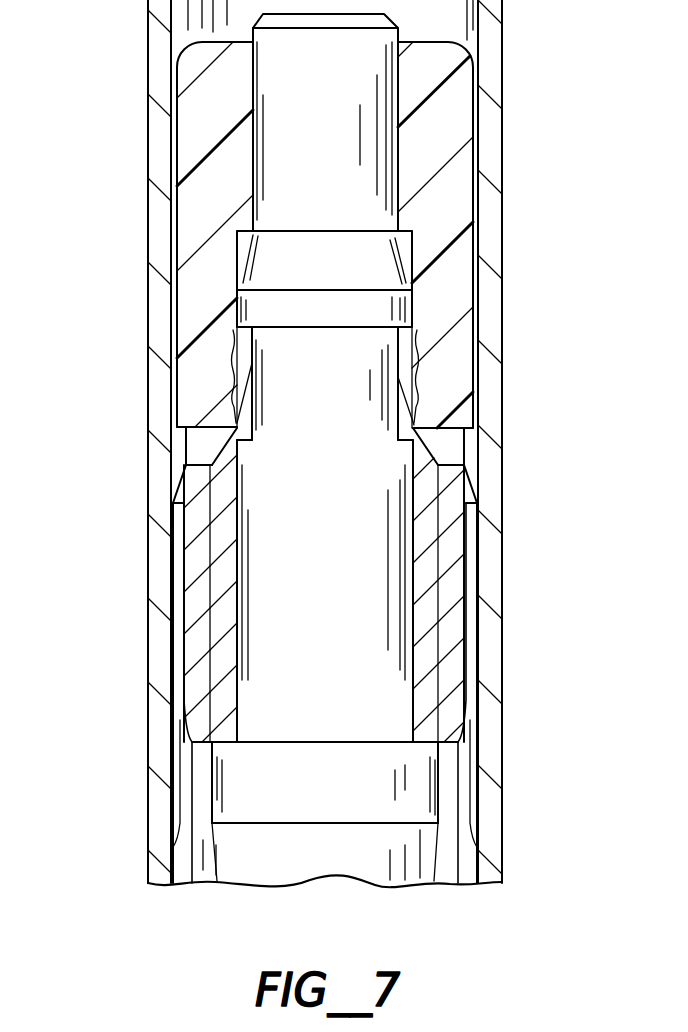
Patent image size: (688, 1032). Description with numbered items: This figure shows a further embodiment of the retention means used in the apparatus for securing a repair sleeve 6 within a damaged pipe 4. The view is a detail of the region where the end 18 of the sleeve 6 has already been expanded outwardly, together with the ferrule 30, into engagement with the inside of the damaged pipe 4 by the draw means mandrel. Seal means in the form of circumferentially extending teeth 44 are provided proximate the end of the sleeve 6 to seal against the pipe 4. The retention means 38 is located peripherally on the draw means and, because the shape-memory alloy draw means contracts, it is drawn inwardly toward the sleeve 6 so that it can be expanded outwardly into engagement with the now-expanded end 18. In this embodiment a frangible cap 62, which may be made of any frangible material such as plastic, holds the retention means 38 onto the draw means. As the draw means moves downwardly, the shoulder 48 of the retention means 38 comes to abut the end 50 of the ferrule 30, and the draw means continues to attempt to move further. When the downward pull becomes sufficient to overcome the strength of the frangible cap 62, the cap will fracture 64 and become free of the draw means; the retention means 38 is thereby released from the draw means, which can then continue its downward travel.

The damaged pipe 4 is at (488, 830).
The repair sleeve 6 is at (182, 860).
The end of the sleeve 18 is at (472, 580).
The ferrule 30 is at (193, 658).
The retention means 38 is at (218, 570).
The teeth 44 is at (477, 642).
The shoulder 48 is at (200, 465).
The end of the ferrule 50 is at (450, 465).
The frangible cap 62 is at (203, 313).
The fracture 64 is at (417, 383).